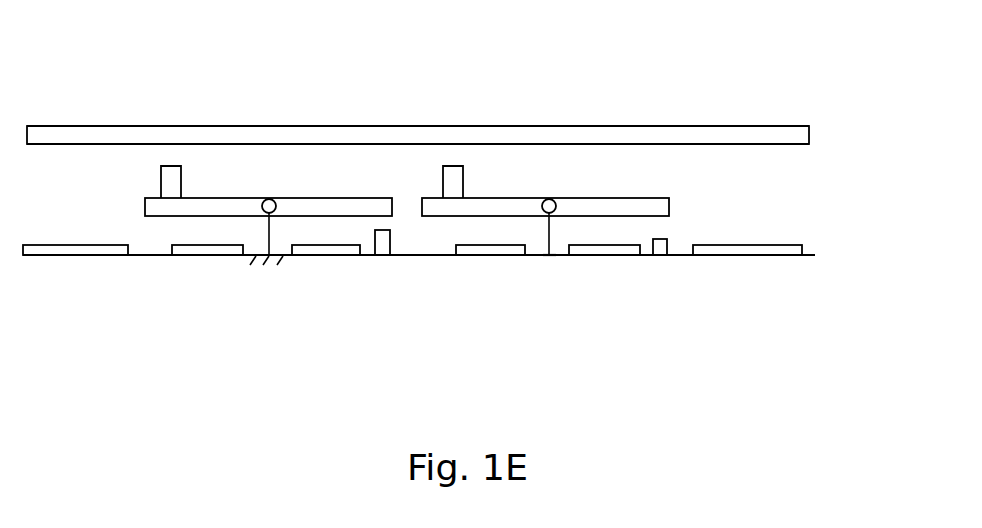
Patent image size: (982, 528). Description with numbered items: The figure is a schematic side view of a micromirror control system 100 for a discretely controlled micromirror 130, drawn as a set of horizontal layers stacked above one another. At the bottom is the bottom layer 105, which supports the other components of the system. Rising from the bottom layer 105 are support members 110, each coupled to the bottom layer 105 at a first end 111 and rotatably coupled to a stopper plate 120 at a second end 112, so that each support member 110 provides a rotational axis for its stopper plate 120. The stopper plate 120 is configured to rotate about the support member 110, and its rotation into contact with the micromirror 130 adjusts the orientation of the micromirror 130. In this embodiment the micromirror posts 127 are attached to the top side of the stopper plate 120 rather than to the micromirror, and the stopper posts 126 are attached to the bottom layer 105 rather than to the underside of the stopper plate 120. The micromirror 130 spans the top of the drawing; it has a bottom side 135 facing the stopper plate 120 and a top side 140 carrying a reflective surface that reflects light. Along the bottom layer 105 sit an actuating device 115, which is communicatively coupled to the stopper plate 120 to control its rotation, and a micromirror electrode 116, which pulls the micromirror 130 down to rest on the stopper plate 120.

The micromirror control system 100 is at (827, 198).
The bottom layer 105 is at (817, 253).
The support member 110 is at (543, 235).
The first end 111 is at (552, 258).
The second end 112 is at (270, 198).
The actuating device 115 is at (622, 260).
The micromirror electrode 116 is at (752, 260).
The stopper plate 120 is at (598, 197).
The stopper plate posts 126 is at (383, 257).
The micromirror posts 127 is at (440, 165).
The micromirror 130 is at (472, 123).
The bottom side 135 is at (78, 148).
The top side 140 is at (107, 122).